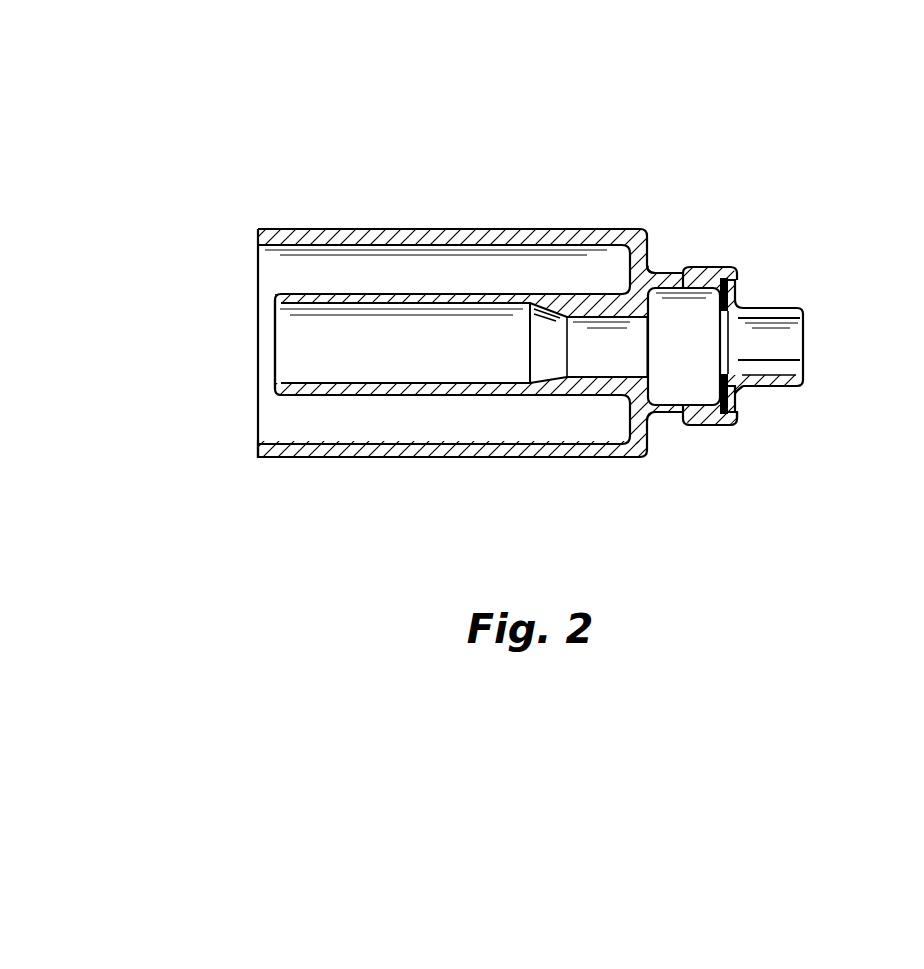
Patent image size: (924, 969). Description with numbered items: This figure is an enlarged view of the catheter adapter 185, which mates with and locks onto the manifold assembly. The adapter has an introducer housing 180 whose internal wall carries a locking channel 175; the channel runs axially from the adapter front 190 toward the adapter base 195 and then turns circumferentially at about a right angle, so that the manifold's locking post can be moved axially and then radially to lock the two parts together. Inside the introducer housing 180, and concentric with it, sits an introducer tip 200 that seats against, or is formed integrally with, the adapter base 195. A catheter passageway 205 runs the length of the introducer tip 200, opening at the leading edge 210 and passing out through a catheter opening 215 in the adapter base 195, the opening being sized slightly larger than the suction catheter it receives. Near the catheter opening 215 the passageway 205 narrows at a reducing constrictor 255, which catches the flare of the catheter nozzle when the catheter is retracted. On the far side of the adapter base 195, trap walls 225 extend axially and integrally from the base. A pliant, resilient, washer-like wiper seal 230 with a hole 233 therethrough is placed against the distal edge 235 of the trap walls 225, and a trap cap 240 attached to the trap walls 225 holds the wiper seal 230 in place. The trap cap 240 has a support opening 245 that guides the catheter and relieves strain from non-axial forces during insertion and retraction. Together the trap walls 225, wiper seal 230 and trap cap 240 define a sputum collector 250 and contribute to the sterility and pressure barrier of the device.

The catheter adapter 185 is at (628, 155).
The locking channel 175 is at (322, 231).
The introducer housing 180 is at (303, 451).
The adapter front 190 is at (257, 451).
The introducer tip 200 is at (384, 294).
The leading edge 210 is at (273, 383).
The catheter passageway 205 is at (445, 352).
The reducing constrictor 255 is at (552, 312).
The catheter opening 215 is at (647, 347).
The adapter base 195 is at (641, 258).
The sputum collector 250 is at (680, 318).
The trap walls 225 is at (673, 425).
The distal edge 235 is at (739, 292).
The hole 233 is at (728, 335).
The wiper seal 230 is at (803, 360).
The support opening 245 is at (792, 368).
The trap cap 240 is at (737, 421).